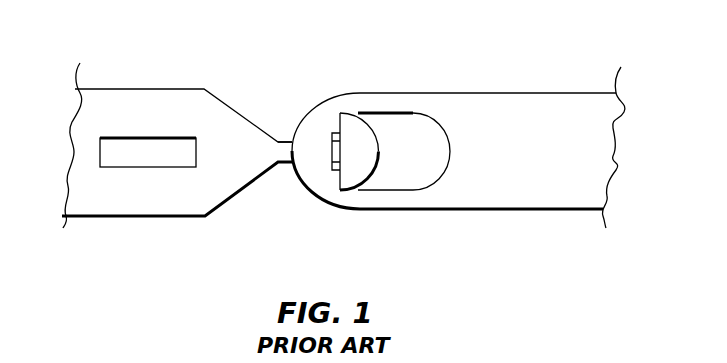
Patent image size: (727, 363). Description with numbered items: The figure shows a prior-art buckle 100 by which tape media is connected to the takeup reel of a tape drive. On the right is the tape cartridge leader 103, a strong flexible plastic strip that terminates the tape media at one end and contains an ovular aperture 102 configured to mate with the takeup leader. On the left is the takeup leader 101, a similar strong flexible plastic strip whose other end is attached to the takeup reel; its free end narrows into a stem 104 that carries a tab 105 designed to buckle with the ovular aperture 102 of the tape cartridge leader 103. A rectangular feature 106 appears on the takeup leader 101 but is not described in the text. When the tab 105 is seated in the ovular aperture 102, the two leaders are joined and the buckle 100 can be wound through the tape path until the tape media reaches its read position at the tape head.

The buckle 100 is at (313, 70).
The takeup leader 101 is at (137, 89).
The ovular aperture 102 is at (413, 175).
The tape cartridge leader 103 is at (472, 92).
The stem 104 is at (282, 163).
The tab 105 is at (372, 167).
The chip 106 is at (132, 153).